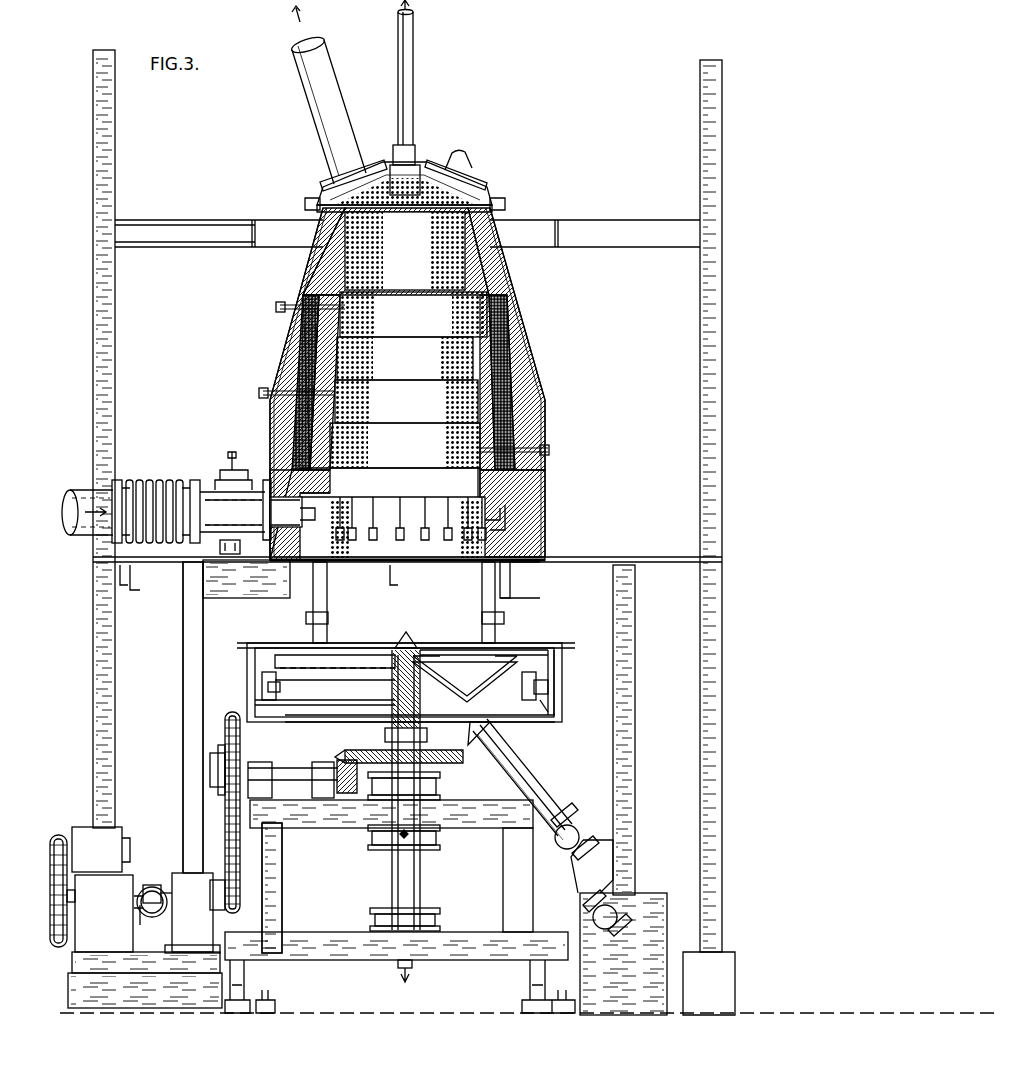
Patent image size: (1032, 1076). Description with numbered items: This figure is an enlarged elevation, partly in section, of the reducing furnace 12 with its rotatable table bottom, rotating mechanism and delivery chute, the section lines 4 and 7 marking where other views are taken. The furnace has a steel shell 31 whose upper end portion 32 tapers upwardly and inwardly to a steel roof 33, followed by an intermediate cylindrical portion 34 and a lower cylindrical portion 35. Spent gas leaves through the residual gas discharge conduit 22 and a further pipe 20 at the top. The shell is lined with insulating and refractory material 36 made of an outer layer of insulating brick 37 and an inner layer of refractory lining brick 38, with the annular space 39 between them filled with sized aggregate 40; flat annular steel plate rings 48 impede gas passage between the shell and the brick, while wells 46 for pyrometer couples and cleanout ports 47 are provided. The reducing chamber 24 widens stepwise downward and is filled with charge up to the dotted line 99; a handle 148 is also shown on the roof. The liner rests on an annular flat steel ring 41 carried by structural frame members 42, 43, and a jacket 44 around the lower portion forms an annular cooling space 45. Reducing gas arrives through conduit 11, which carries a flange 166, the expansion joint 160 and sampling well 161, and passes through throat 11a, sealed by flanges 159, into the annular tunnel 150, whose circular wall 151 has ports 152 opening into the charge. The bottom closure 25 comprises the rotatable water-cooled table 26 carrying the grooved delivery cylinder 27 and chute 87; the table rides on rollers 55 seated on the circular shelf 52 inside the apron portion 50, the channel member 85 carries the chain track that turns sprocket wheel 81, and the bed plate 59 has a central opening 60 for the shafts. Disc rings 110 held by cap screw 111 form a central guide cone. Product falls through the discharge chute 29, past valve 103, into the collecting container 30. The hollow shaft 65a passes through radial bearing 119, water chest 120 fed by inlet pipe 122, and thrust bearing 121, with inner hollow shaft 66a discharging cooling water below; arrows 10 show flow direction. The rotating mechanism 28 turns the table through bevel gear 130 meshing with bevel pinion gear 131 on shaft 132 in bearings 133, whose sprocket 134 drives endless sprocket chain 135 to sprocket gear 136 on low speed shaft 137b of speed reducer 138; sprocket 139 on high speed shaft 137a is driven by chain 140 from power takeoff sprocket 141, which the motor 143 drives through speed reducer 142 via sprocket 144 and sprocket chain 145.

The section line 4 is at (254, 490).
The section line 7 is at (228, 628).
The gas reformer 10 is at (394, 824).
The conduit 11 is at (82, 490).
The throat 11a is at (268, 520).
The reducing furnace 12 is at (265, 347).
The exhaust pipe 20 is at (413, 80).
The residual gas discharge conduit 22 is at (316, 118).
The reducing chamber 24 is at (416, 324).
The bottom closure 25 is at (240, 700).
The rotatable water-cooled table 26 is at (342, 660).
The grooved delivery cylinder 27 is at (505, 656).
The rotating mechanism 28 is at (144, 860).
The discharge chute 29 is at (520, 778).
The collecting container 30 is at (655, 895).
The steel shell 31 is at (525, 326).
The upper end portion 32 is at (512, 285).
The steel roof 33 is at (410, 165).
The intermediate cylindrical portion 34 is at (540, 440).
The lower cylindrical portion 35 is at (483, 606).
The insulating and refractory material 36 is at (531, 369).
The insulating brick 37 is at (516, 347).
The refractory lining brick 38 is at (483, 357).
The annular space 39 is at (542, 402).
The sized aggregate 40 is at (520, 425).
The annular flat steel ring 41 is at (546, 559).
The structural frame member 42 is at (536, 582).
The structural frame member 43 is at (290, 590).
The jacket 44 is at (313, 606).
The annular cooling space 45 is at (483, 590).
The wells 46 is at (278, 307).
The cleanout ports 47 is at (306, 620).
The flat annular steel plate rings 48 is at (302, 282).
The apron portion 50 is at (560, 685).
The circular shelf 52 is at (542, 706).
The rollers 55 is at (264, 686).
The bed plate 59 is at (515, 724).
The central opening 60 is at (390, 726).
The hollow shaft 65a is at (421, 732).
The inner hollow shaft 66a is at (410, 945).
The sprocket wheel 81 is at (550, 655).
The channel member 85 is at (556, 700).
The chute 87 is at (462, 680).
The dotted line 99 is at (452, 222).
The valve 103 is at (572, 830).
The flat disc rings 110 is at (400, 645).
The cap screw 111 is at (412, 645).
The radial bearing 119 is at (441, 788).
The water chest 120 is at (441, 838).
The thrust bearing 121 is at (436, 916).
The inlet pipe 122 is at (385, 838).
The bevel gear 130 is at (350, 755).
The bevel pinion gear 131 is at (353, 791).
The horizontally disposed shaft 132 is at (292, 772).
The bearings 133 is at (310, 806).
The sprocket 134 is at (183, 728).
The endless sprocket chain 135 is at (270, 865).
The sprocket gear 136 is at (242, 905).
The high speed shaft 137a is at (163, 890).
The low speed shaft 137b is at (234, 921).
The speed reducer 138 is at (192, 913).
The sprocket 139 is at (143, 890).
The endless sprocket chain 140 is at (140, 912).
The power takeoff sprocket 141 is at (146, 962).
The speed reducer 142 is at (112, 964).
The motor 143 is at (116, 830).
The sprocket 144 is at (68, 940).
The sprocket chain 145 is at (68, 872).
The handle 148 is at (472, 170).
The annular tunnel 150 is at (318, 515).
The circular wall 151 is at (484, 506).
The ports 152 is at (352, 540).
The flanges 159 is at (262, 546).
The expansion joint 160 is at (168, 480).
The sampling well 161 is at (230, 466).
The flange 166 is at (118, 480).